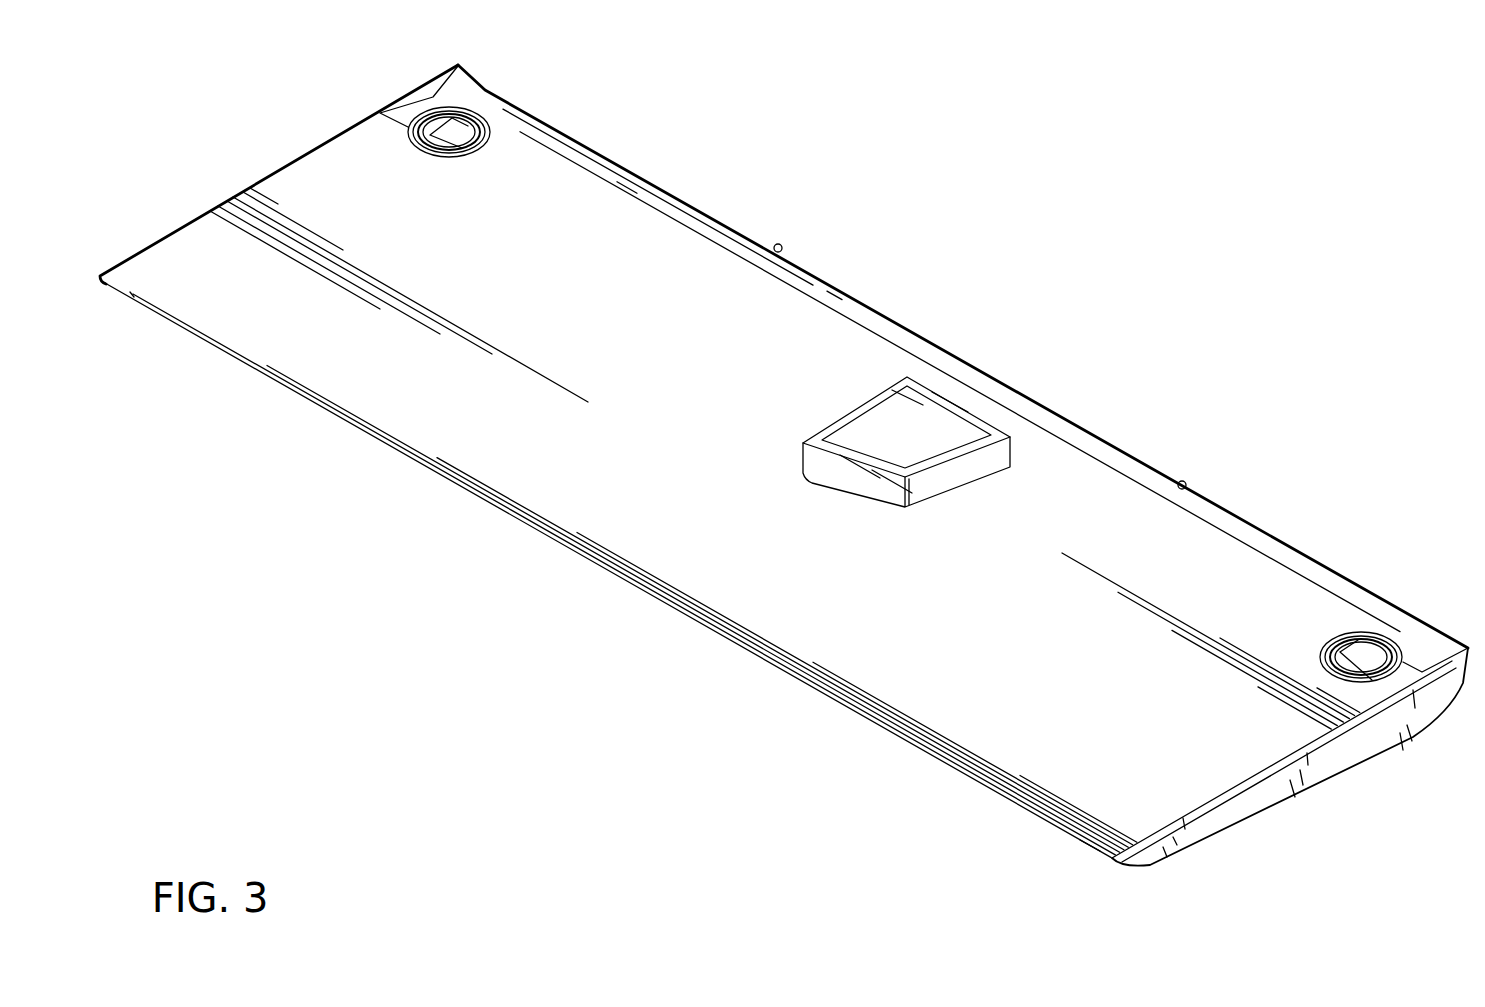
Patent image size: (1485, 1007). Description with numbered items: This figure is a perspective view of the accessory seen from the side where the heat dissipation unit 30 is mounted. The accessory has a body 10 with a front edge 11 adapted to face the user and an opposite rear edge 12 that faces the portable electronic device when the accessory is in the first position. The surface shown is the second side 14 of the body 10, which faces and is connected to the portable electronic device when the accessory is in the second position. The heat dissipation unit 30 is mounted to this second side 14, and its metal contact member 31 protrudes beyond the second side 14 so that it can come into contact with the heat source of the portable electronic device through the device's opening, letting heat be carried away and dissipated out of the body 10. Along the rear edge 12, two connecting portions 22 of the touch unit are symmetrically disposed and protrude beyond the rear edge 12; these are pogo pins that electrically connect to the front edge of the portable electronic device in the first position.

The body 10 is at (1322, 812).
The front edge 11 is at (594, 592).
The rear edge 12 is at (1108, 428).
The second side 14 is at (1236, 600).
The connecting portion 22 is at (778, 244).
The heat dissipation unit 30 is at (918, 401).
The contact member 31 is at (973, 428).